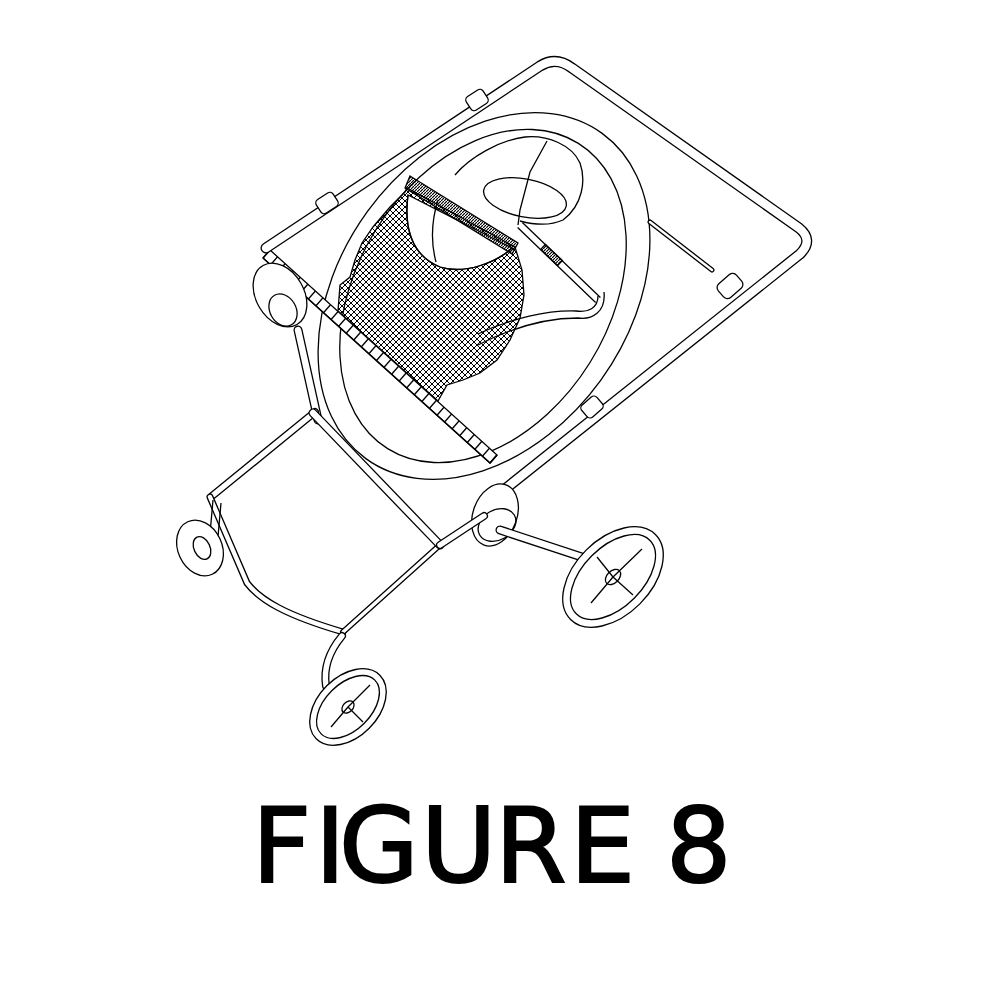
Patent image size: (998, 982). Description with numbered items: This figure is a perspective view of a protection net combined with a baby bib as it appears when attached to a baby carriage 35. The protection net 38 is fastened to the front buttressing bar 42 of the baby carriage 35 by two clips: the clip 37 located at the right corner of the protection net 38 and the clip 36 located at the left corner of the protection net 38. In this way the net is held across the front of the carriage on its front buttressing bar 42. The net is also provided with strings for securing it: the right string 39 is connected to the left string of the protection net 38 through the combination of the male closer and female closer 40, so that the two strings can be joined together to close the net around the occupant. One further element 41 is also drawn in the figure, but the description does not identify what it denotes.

The baby carriage 35 is at (650, 372).
The clip 36 is at (285, 272).
The clip 37 is at (437, 425).
The protection net 38 is at (375, 233).
The right string 39 is at (597, 283).
The male closer and female closer 40 is at (540, 235).
The belt buckle 41 is at (550, 250).
The front buttressing bar 42 is at (335, 318).